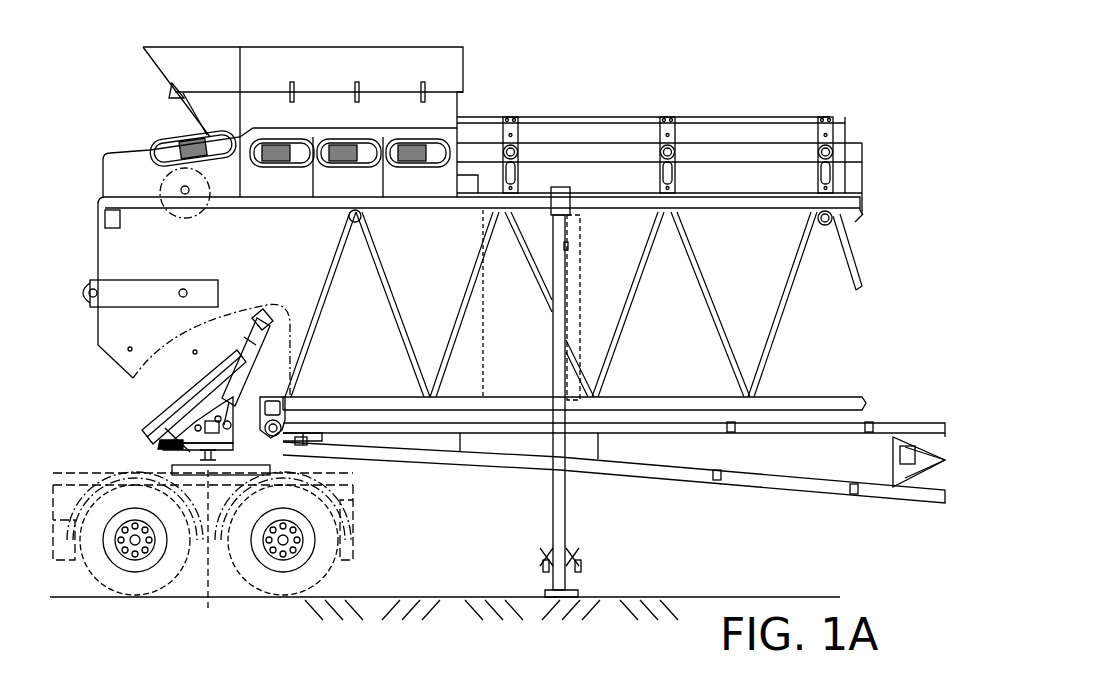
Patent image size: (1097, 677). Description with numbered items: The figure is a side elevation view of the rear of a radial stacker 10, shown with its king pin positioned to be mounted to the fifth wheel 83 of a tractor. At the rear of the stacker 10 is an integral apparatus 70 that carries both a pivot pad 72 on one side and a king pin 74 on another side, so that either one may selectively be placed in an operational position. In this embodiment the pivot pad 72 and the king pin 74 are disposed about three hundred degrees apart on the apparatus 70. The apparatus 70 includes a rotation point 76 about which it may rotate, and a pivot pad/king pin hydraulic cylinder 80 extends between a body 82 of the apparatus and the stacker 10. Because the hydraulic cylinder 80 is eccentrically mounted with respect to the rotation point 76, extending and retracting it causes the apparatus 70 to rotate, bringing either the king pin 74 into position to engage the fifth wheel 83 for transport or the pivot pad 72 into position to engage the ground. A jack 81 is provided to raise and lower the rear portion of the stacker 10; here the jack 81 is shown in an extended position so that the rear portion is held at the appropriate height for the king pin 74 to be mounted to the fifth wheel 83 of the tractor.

The stacker 10 is at (550, 76).
The apparatus 70 is at (165, 447).
The pivot pad 72 is at (155, 432).
The king pin 74 is at (175, 443).
The rotation point 76 is at (225, 422).
The pivot pad/king pin hydraulic cylinder 80 is at (231, 363).
The jack 81 is at (565, 505).
The body 82 is at (284, 392).
The fifth wheel 83 is at (210, 558).